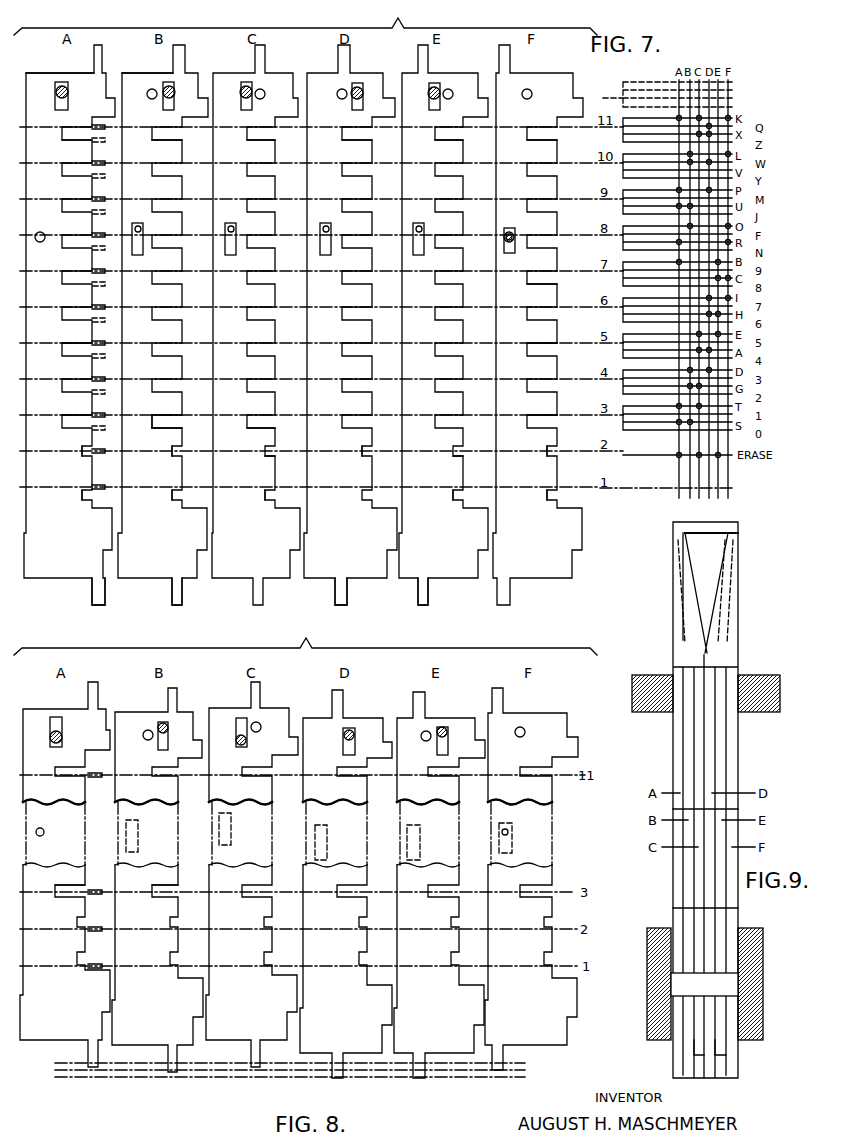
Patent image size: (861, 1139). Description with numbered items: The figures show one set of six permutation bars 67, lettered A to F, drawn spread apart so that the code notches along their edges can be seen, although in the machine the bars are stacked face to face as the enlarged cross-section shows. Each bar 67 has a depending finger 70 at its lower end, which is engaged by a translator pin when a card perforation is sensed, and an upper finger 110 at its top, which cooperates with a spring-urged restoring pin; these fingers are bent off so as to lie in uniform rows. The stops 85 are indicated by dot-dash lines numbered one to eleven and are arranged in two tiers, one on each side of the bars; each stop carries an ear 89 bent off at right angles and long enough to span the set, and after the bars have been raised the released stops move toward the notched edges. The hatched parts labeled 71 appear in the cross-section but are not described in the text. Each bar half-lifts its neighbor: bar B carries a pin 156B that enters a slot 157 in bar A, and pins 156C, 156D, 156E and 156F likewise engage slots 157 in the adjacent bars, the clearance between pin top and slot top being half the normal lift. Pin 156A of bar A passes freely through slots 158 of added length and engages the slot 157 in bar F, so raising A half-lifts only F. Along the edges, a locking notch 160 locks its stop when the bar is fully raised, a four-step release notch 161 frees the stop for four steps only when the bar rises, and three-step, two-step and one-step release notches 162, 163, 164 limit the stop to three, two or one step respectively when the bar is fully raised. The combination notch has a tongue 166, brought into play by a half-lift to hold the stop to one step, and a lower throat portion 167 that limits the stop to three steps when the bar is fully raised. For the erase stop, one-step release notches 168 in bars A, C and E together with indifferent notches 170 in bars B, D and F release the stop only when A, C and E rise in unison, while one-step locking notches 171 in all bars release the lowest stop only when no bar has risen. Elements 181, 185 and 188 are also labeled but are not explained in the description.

In FIG. 7, the permutation bars 67 is at (252, 548).
In FIG. 8, the permutation bars 67 is at (299, 880).
In FIG. 9, the permutation bars 67 is at (690, 880).
In FIG. 7, the depending finger 70 is at (176, 596).
In FIG. 9, the guide comb 71 is at (765, 712).
In FIG. 7, the stops 85 is at (612, 420).
In FIG. 8, the stops 85 is at (560, 892).
In FIG. 9, the stops 85 is at (652, 932).
In FIG. 7, the ear 89 is at (106, 197).
In FIG. 8, the ear 89 is at (96, 780).
In FIG. 9, the ear 89 is at (740, 978).
In FIG. 7, the upper fingers 110 is at (173, 52).
In FIG. 9, the upper fingers 110 is at (697, 622).
In FIG. 7, the pin 156A is at (40, 243).
In FIG. 7, the pin 156B is at (152, 89).
In FIG. 8, the pin 156B is at (62, 737).
In FIG. 7, the pin 156C is at (246, 92).
In FIG. 8, the pin 156C is at (256, 722).
In FIG. 7, the pin 156D is at (340, 98).
In FIG. 7, the pin 156E is at (440, 92).
In FIG. 8, the pin 156E is at (426, 731).
In FIG. 7, the pin 156F is at (530, 88).
In FIG. 8, the pin 156F is at (522, 727).
In FIG. 7, the slot 157 is at (58, 82).
In FIG. 7, the slots of added length 158 is at (140, 214).
In FIG. 7, the locking notch 160 is at (178, 142).
In FIG. 7, the four-step release notch 161 is at (252, 142).
In FIG. 9, the four-step release notch 161 is at (722, 1050).
In FIG. 7, the three-step release notch 162 is at (348, 142).
In FIG. 7, the two-step release notch 163 is at (440, 142).
In FIG. 7, the one-step release notch 164 is at (82, 142).
In FIG. 7, the tongue 166 is at (158, 416).
In FIG. 7, the lower throat portion 167 is at (166, 430).
In FIG. 7, the one-step release notches 168 is at (82, 452).
In FIG. 7, the indifferent notches 170 is at (172, 454).
In FIG. 7, the one-step locking notches 171 is at (84, 502).
In FIG. 8, the tooth 181 is at (62, 890).
In FIG. 9, the tooth 181 is at (690, 1040).
In FIG. 7, the tooth 185 is at (530, 286).
In FIG. 8, the tooth 188 is at (156, 892).